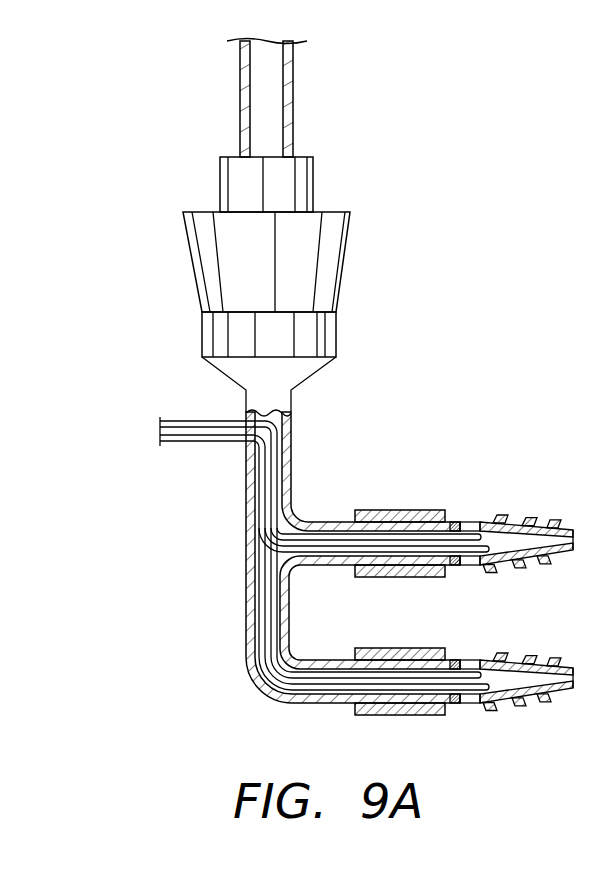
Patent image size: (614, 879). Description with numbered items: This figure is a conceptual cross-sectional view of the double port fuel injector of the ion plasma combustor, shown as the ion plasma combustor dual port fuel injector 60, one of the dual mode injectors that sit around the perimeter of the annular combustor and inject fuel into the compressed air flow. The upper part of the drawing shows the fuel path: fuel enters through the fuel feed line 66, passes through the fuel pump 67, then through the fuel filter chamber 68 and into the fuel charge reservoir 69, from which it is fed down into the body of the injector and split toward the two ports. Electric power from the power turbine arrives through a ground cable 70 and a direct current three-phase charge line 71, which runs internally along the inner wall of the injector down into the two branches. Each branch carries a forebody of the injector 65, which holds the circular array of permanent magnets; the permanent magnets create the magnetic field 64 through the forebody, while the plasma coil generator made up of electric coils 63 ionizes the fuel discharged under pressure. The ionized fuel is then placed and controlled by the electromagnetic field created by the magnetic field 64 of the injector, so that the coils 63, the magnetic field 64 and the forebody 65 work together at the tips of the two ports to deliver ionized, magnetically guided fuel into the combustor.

The ion plasma combustor dual port fuel injector 60 is at (340, 132).
The electric coils 63 is at (490, 568).
The magnetic field 64 is at (382, 509).
The forebody of the injector 65 is at (330, 653).
The fuel feed line 66 is at (243, 93).
The fuel pump 67 is at (221, 177).
The fuel filter chamber 68 is at (198, 259).
The fuel charge reservoir 69 is at (202, 327).
The ground cable 70 is at (212, 418).
The direct current 3-phase charge line 71 is at (190, 447).